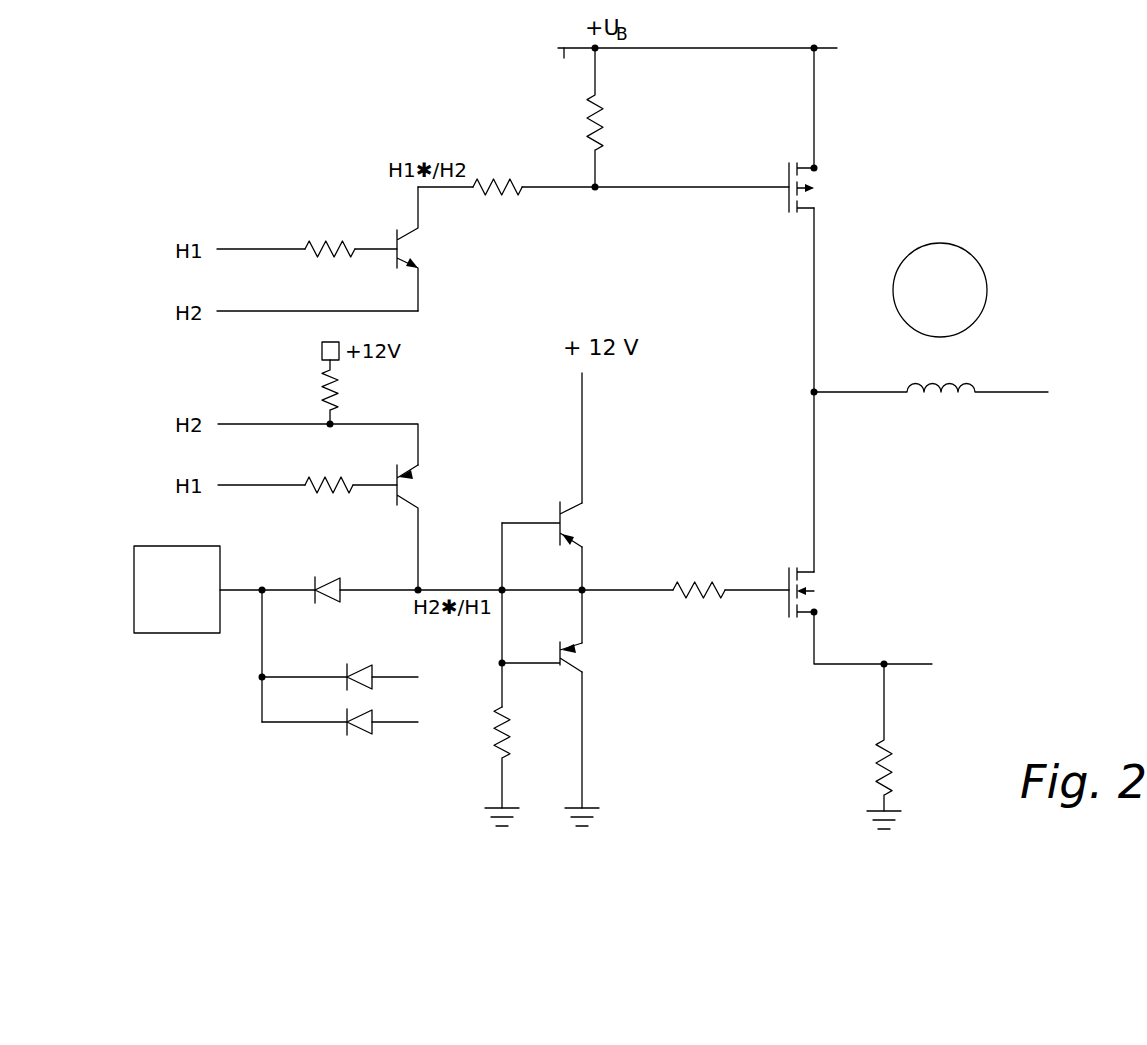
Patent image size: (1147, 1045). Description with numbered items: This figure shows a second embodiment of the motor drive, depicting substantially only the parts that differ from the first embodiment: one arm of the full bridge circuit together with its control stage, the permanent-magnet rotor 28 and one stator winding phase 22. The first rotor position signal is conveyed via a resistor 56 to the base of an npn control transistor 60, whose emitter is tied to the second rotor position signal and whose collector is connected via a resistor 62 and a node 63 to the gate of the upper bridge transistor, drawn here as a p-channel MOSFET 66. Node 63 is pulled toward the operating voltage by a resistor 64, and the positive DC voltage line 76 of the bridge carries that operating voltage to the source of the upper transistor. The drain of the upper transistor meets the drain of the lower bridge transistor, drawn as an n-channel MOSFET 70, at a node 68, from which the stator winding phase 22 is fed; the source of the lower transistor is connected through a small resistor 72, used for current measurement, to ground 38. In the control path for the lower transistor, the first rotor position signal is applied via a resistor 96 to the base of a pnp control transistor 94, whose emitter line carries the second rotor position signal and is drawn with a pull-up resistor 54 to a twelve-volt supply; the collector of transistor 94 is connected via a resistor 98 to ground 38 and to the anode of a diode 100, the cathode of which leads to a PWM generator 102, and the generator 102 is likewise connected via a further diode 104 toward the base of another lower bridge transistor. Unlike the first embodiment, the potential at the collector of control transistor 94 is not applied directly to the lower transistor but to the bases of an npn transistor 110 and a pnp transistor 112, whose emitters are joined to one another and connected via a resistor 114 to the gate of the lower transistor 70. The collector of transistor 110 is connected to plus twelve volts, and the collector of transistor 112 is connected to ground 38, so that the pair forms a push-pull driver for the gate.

The stator winding phase 22 is at (936, 402).
The permanent-magnet rotor 28 is at (973, 250).
The ground 38 is at (878, 808).
The pull-up resistor 54 is at (322, 395).
The resistor 56 is at (328, 240).
The npn control transistor 60 is at (397, 233).
The resistor 62 is at (502, 198).
The node 63 is at (595, 198).
The resistor 64 is at (607, 115).
The upper bridge transistor 66 is at (789, 173).
The node 68 is at (814, 390).
The lower bridge transistor 70 is at (789, 578).
The resistor 72 is at (891, 765).
The positive DC voltage line 76 is at (564, 58).
The pnp control transistor 94 is at (399, 470).
The resistor 96 is at (325, 478).
The resistor 98 is at (495, 735).
The diode 100 is at (340, 575).
The PWM generator 102 is at (180, 633).
The diode 104 is at (355, 695).
The npn transistor 110 is at (558, 503).
The pnp transistor 112 is at (558, 643).
The resistor 114 is at (695, 583).